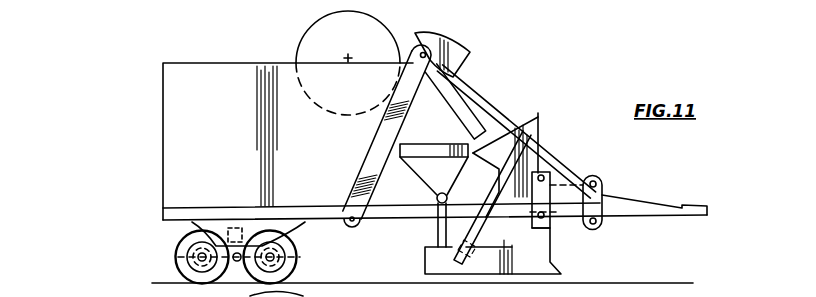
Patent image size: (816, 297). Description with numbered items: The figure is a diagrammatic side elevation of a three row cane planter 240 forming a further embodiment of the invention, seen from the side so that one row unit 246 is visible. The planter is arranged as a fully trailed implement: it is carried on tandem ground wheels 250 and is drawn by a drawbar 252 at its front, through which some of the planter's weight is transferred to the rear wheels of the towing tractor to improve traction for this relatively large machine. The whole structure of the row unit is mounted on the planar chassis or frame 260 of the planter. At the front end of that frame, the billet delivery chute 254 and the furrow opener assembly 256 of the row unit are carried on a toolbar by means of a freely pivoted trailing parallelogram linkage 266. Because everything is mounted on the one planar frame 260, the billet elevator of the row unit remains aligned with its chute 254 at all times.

The planter 240 is at (500, 70).
The row unit 246 is at (368, 142).
The tandem ground wheels 250 is at (190, 232).
The drawbar 252 is at (647, 200).
The billet delivery chute 254 is at (535, 119).
The furrow opener assembly 256 is at (553, 251).
The frame 260 is at (398, 217).
The trailing parallelogram linkage 266 is at (583, 224).